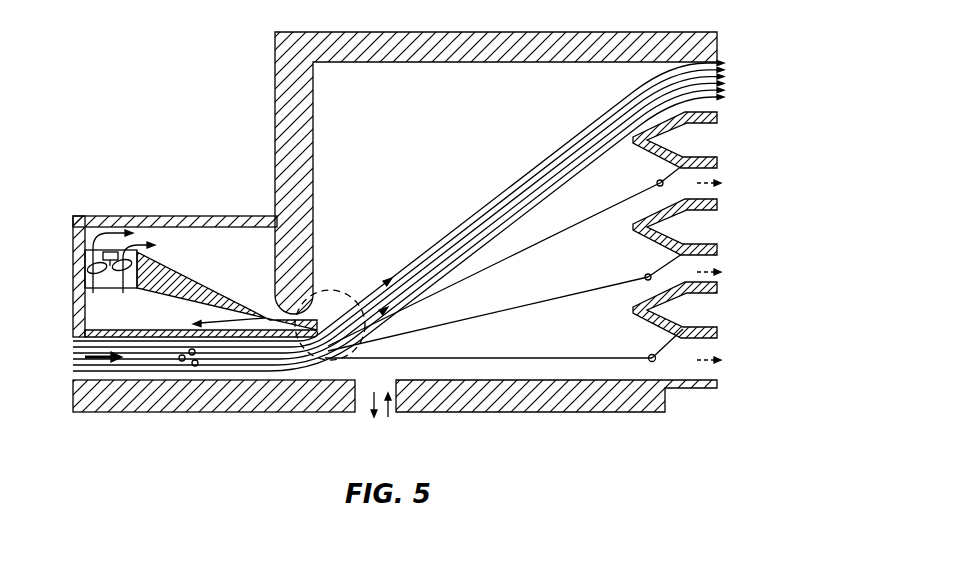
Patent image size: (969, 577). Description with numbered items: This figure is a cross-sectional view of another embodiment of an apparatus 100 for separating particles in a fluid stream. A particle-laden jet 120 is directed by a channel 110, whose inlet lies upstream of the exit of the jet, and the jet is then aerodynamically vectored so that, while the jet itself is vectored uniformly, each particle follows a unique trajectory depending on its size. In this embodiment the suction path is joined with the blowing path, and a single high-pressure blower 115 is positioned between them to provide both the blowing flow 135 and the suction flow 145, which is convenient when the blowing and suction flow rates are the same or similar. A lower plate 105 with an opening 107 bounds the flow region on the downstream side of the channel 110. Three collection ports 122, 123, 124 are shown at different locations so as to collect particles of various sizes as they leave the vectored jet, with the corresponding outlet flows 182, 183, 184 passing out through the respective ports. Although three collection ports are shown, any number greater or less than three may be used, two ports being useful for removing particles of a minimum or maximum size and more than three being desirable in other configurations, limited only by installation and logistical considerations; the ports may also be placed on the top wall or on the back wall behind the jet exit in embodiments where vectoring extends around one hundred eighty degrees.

The air moving apparatus 100 is at (414, 173).
The lower housing plate 105 is at (565, 404).
The air inlet gap 107 is at (388, 420).
The channel 110 is at (73, 383).
The blower 115 is at (85, 258).
The jet 120 is at (73, 357).
The first deflector vane 122 is at (685, 160).
The second deflector vane 123 is at (688, 252).
The third deflector vane 124 is at (688, 330).
The blowing flow 135 is at (251, 258).
The suction flow 145 is at (224, 310).
The first outlet air stream 182 is at (733, 177).
The second outlet air stream 183 is at (733, 266).
The third outlet air stream 184 is at (737, 354).